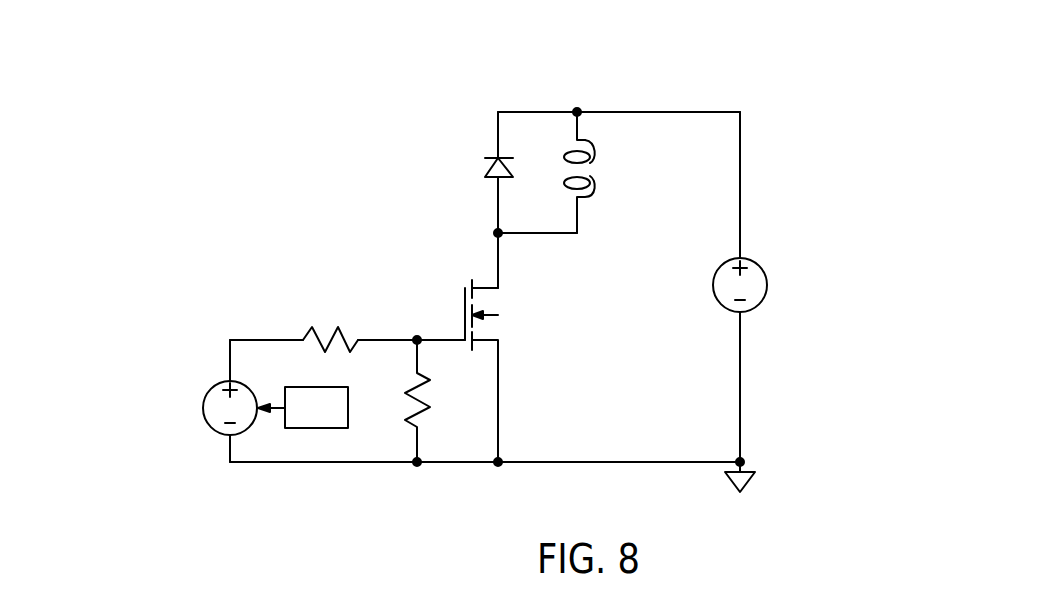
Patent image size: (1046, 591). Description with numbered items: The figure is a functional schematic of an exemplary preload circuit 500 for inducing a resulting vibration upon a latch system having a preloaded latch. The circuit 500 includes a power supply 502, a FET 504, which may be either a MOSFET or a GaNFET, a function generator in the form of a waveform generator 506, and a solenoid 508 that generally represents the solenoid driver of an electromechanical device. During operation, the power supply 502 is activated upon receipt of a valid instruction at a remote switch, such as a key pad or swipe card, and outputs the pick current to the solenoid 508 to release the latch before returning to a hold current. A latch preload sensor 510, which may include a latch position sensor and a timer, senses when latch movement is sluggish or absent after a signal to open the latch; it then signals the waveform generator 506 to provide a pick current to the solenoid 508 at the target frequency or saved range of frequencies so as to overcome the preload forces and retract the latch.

The circuit 500 is at (290, 112).
The power supply 502 is at (715, 290).
The FET 504 is at (465, 312).
The waveform generator 506 is at (220, 380).
The solenoid 508 is at (585, 140).
The latch preload sensor 510 is at (303, 407).